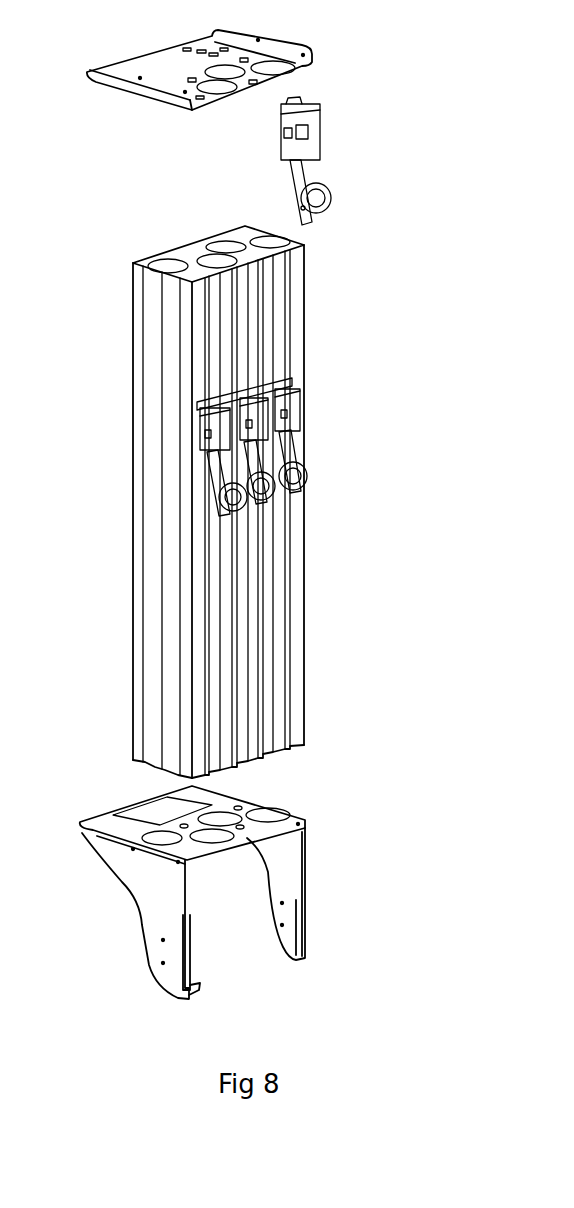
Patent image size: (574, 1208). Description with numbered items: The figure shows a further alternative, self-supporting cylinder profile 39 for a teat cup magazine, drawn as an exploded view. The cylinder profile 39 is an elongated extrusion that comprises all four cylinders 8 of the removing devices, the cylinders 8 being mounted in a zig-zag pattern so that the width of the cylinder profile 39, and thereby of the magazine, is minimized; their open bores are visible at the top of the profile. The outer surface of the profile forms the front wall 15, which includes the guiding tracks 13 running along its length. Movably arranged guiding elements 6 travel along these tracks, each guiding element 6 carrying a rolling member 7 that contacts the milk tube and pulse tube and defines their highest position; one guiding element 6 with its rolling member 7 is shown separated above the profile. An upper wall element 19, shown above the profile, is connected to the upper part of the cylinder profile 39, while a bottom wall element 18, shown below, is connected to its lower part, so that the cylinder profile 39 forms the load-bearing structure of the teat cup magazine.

The cylinder profile 39 is at (320, 385).
The guiding tracks 13 is at (274, 338).
The front wall 15 is at (281, 293).
The cylinders 8 is at (221, 247).
The guiding element 6 is at (286, 410).
The rolling member 7 is at (290, 478).
The upper wall element 19 is at (153, 60).
The bottom wall element 18 is at (132, 865).